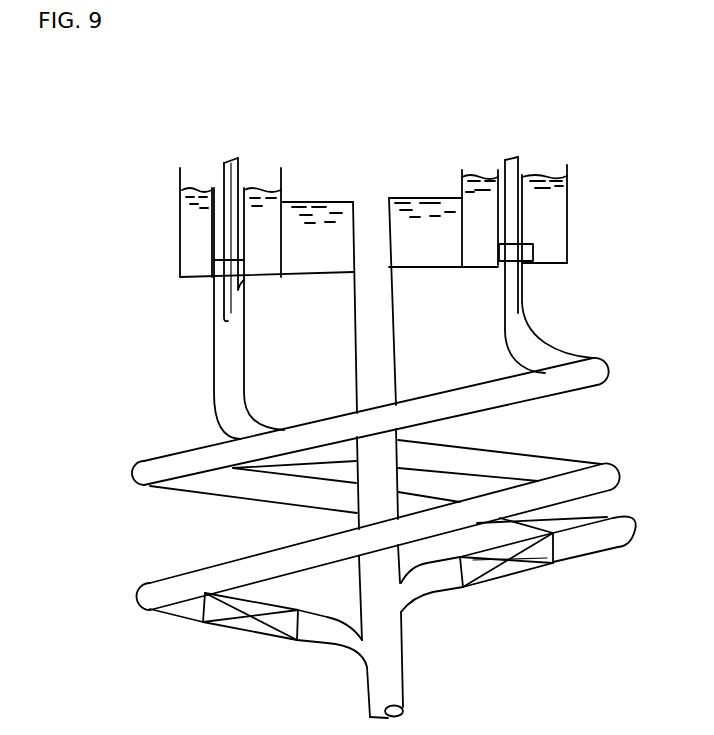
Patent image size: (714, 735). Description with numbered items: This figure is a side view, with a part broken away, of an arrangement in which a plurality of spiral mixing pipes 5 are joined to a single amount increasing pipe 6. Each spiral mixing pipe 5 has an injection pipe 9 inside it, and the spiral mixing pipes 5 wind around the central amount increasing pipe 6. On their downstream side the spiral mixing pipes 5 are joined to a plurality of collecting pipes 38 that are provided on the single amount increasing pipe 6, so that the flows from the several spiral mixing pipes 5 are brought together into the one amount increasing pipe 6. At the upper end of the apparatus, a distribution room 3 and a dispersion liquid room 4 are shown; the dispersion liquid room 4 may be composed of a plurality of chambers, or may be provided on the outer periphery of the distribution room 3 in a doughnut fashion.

The distribution room 3 is at (330, 227).
The dispersion liquid room 4 is at (195, 196).
The spiral mixing pipe 5 is at (546, 390).
The amount increasing pipe 6 is at (378, 321).
The injection pipe 9 is at (231, 183).
The collecting pipe 38 is at (322, 632).